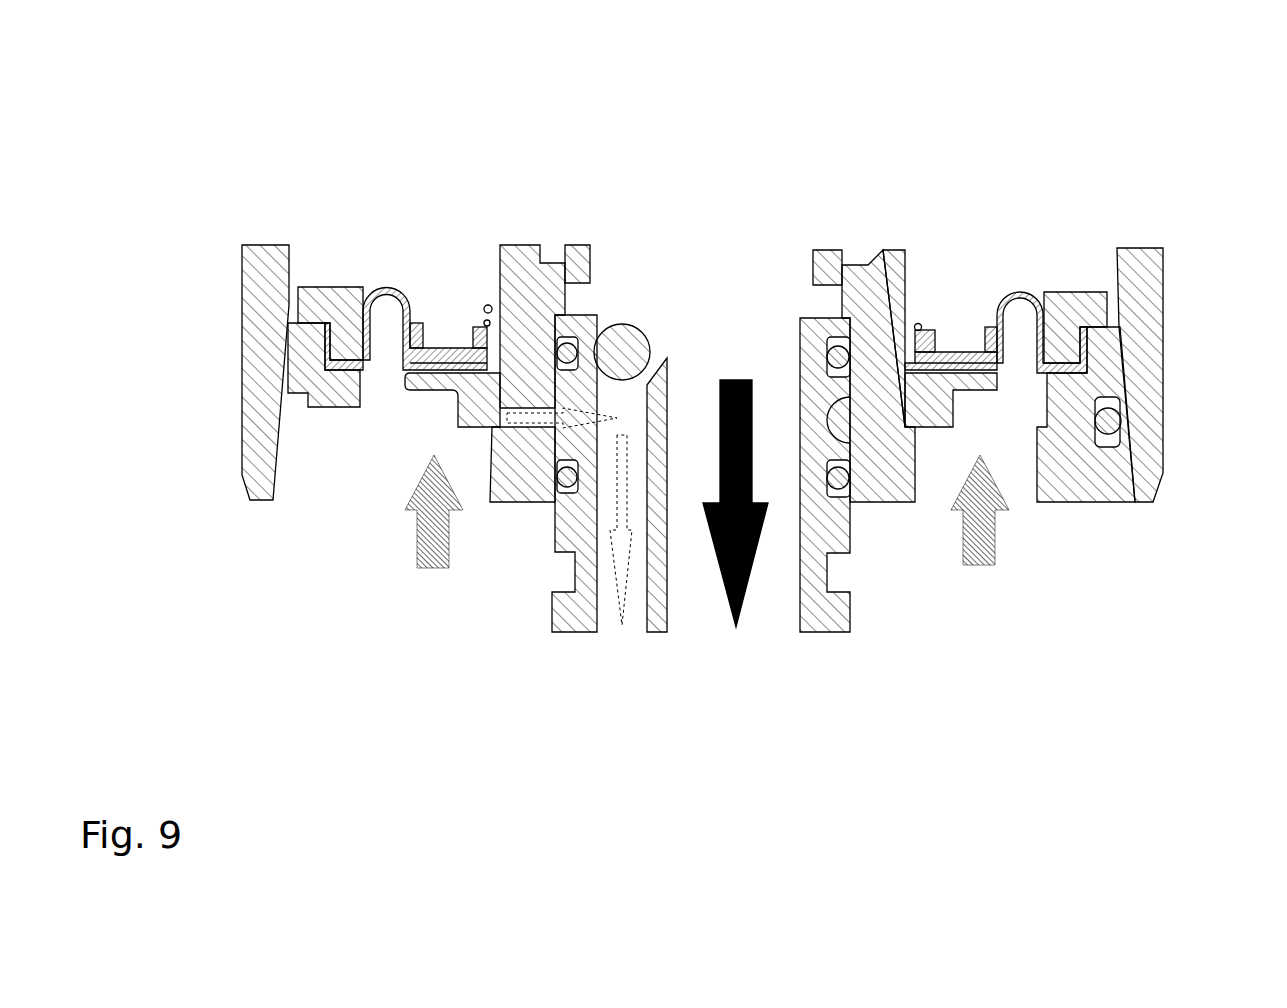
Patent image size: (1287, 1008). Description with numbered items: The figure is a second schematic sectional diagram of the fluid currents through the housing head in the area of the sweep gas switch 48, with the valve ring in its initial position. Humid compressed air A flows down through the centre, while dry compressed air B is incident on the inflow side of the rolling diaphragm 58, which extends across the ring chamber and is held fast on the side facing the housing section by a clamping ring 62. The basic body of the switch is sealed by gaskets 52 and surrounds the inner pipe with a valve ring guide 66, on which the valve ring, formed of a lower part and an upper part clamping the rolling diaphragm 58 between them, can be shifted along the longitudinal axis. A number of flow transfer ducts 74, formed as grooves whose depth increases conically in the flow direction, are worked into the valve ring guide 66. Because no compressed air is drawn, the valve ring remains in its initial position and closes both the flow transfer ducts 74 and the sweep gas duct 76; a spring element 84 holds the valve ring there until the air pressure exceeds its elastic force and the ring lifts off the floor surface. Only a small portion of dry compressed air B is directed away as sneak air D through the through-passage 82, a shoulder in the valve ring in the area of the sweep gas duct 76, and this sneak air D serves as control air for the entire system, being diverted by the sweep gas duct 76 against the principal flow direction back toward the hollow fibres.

The clamping ring 62 is at (315, 302).
The spring element 84 is at (485, 322).
The through-passage 82 is at (488, 430).
The sweep gas duct 76 is at (637, 512).
The valve ring guide 66 is at (862, 280).
The flow transfer ducts 74 is at (895, 300).
The rolling diaphragm 58 is at (1027, 292).
The sweep gas switch 48 is at (1115, 487).
The gasket 52 is at (1118, 412).
The humid compressed air A is at (740, 378).
The dry compressed air B is at (432, 566).
The sneak air D is at (636, 604).